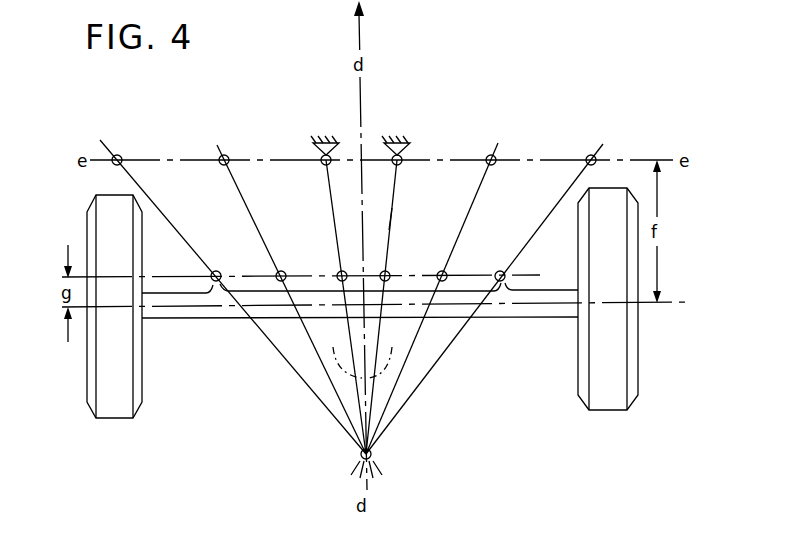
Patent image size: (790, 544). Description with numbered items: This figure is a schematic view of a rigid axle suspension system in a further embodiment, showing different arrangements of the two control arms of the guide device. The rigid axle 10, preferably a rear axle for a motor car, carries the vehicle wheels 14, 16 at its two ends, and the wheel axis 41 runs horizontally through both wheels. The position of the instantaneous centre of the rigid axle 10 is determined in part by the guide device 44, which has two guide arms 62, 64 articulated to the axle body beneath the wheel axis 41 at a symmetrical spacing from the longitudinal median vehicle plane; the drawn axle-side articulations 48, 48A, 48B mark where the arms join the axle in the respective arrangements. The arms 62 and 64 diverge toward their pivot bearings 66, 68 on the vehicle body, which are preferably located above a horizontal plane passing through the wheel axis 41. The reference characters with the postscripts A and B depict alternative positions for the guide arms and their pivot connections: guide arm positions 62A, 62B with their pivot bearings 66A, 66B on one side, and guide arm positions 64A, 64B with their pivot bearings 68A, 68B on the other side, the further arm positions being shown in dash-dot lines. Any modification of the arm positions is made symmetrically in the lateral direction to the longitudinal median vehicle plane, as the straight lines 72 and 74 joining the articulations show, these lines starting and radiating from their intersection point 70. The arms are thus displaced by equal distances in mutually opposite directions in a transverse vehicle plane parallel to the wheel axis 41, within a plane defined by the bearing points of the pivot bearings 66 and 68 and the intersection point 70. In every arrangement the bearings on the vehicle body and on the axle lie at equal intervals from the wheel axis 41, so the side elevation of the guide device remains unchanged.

The rigid axle 10 is at (197, 334).
The vehicle wheel 14 is at (600, 398).
The vehicle wheel 16 is at (106, 400).
The wheel axis 41 is at (674, 299).
The guide device 44 is at (405, 218).
The axle pivot points 48 is at (343, 271).
The axle pivot points 48A is at (283, 271).
The axle pivot points 48B is at (218, 271).
The guide arm 62 is at (334, 220).
The guide arm alternative position 62A is at (248, 205).
The guide arm alternative position 62B is at (199, 206).
The guide arm 64 is at (392, 228).
The guide arm alternative position 64A is at (468, 218).
The guide arm alternative position 64B is at (562, 200).
The pivot bearing 66 is at (320, 158).
The pivot bearing alternative position 66A is at (228, 156).
The pivot bearing alternative position 66B is at (121, 155).
The pivot bearing 68 is at (404, 156).
The pivot bearing alternative position 68A is at (496, 155).
The pivot bearing alternative position 68B is at (586, 158).
The intersection point 70 is at (372, 452).
The straight line 72 is at (338, 356).
The straight line 74 is at (384, 356).